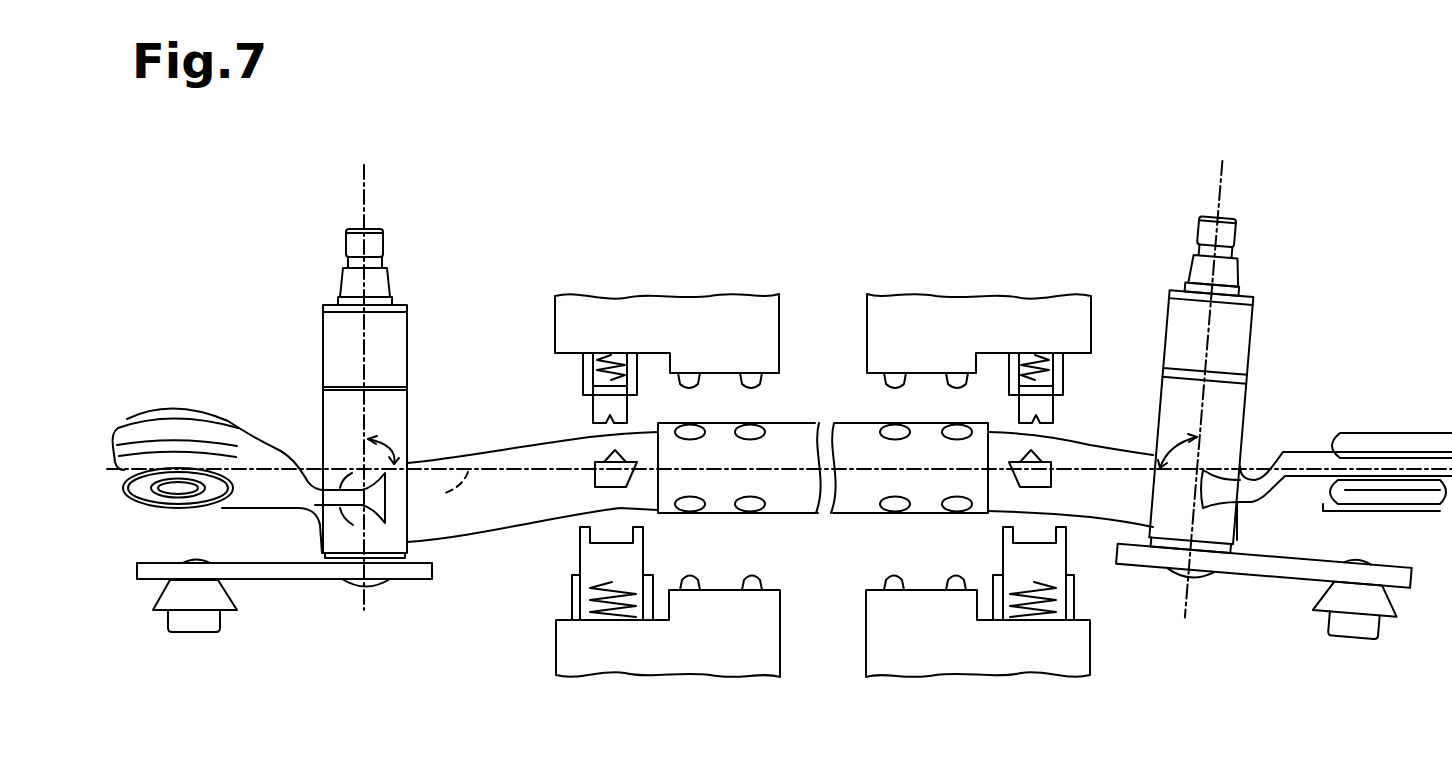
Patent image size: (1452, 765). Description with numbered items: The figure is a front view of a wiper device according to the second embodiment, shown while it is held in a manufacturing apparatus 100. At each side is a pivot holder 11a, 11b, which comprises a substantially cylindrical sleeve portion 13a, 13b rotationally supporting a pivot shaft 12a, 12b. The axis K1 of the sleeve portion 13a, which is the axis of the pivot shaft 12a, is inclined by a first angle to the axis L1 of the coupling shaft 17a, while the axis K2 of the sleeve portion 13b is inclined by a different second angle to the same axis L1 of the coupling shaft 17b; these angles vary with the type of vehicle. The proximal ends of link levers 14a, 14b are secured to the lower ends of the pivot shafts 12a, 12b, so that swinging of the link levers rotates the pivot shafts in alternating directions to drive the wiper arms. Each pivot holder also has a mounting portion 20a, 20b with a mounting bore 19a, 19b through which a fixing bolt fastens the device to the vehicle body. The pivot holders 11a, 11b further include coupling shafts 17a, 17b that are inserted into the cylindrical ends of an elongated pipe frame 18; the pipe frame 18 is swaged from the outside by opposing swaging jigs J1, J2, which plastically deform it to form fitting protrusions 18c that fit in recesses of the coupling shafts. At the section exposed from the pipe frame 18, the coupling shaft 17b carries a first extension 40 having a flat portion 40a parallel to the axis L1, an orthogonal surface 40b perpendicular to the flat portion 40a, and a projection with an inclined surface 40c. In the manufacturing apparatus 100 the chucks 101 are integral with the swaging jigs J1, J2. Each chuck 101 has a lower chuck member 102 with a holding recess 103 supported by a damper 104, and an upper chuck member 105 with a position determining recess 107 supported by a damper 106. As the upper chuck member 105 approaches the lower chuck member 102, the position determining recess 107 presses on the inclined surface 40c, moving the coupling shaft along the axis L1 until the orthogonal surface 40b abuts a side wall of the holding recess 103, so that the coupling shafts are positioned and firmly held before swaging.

The axis of the sleeve portion 13a K1 is at (368, 187).
The axis of the sleeve portion 13b K2 is at (1230, 187).
The pivot holder 11a is at (322, 327).
The pivot holder 11b is at (1253, 332).
The pivot shaft 12a is at (345, 240).
The pivot shaft 12b is at (1237, 238).
The sleeve portion 13a is at (405, 330).
The sleeve portion 13b is at (1172, 310).
The link lever 14a is at (286, 580).
The link lever 14b is at (1253, 578).
The coupling shaft 17a is at (515, 450).
The coupling shaft 17b is at (1100, 450).
The pipe frame 18 is at (841, 423).
The fitting protrusion 18c is at (702, 440).
The mounting bore 19a is at (160, 410).
The mounting bore 19b is at (1420, 434).
The mounting portion 20a is at (208, 428).
The mounting portion 20b is at (1346, 444).
The first extension 40 is at (602, 488).
The flat portion 40a is at (624, 488).
The orthogonal surface 40b is at (592, 476).
The inclined surface 40c is at (605, 456).
The manufacturing apparatus 100 is at (870, 292).
The chuck 101 is at (825, 487).
The lower chuck member 102 is at (557, 632).
The holding recess 103 is at (578, 560).
The damper 104 is at (598, 614).
The upper chuck member 105 is at (557, 307).
The damper 106 is at (612, 360).
The position determining recess 107 is at (628, 405).
The swaging jig J1 is at (754, 388).
The swaging jig J2 is at (762, 577).
The axis of the coupling shaft L1 is at (446, 502).